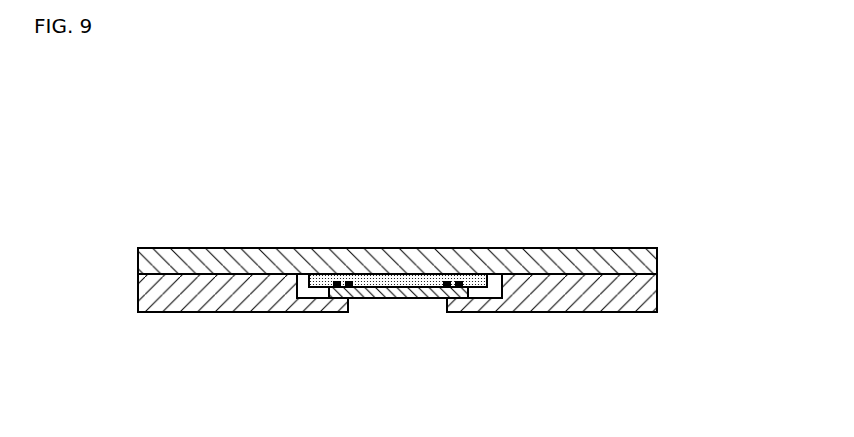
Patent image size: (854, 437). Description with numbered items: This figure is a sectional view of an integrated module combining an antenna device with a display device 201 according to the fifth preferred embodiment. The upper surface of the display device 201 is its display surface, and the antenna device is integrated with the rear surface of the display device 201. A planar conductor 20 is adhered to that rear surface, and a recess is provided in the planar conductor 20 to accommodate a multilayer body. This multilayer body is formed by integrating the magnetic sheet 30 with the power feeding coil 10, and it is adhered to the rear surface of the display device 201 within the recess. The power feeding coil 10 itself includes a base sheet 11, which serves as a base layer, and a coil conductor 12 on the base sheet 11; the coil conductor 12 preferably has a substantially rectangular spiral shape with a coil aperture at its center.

The display device 201 is at (652, 262).
The planar conductor 20 is at (652, 297).
The magnetic sheet 30 is at (488, 282).
The power feeding coil 10 is at (406, 286).
The base sheet 11 is at (377, 298).
The coil conductor 12 is at (446, 281).